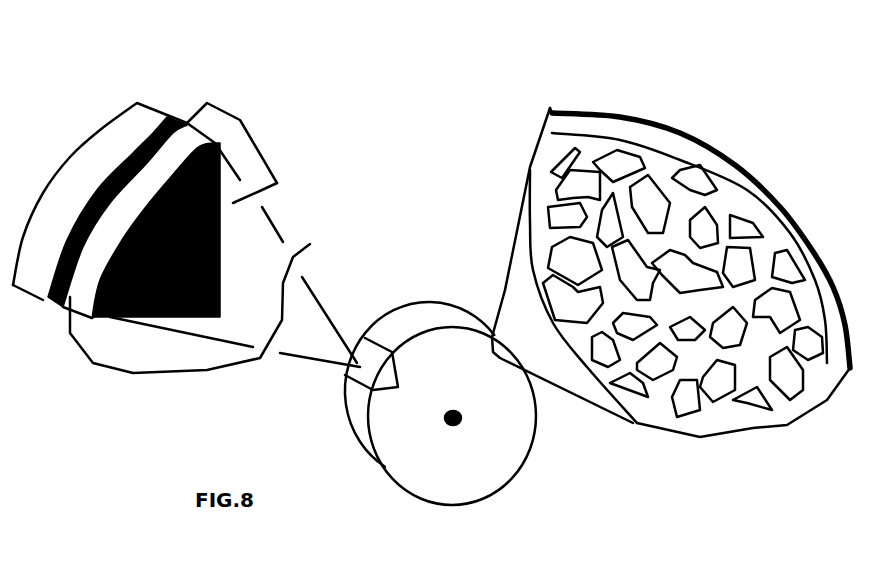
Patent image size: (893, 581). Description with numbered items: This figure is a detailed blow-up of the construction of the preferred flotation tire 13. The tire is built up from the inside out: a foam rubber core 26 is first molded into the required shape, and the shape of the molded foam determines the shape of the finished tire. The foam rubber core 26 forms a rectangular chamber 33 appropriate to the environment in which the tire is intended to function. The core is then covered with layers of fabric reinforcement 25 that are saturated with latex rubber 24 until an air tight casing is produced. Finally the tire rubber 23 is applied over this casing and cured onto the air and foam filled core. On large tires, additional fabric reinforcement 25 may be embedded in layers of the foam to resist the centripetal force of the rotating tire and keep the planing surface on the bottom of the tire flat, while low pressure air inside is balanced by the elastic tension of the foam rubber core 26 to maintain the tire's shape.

The flotation tire 13 is at (360, 422).
The tire rubber 23 is at (550, 107).
The latex rubber layer 24 is at (545, 122).
The fabric reinforcement 25 is at (172, 118).
The foam rubber core 26 is at (563, 217).
The rectangular chamber 33 is at (527, 145).